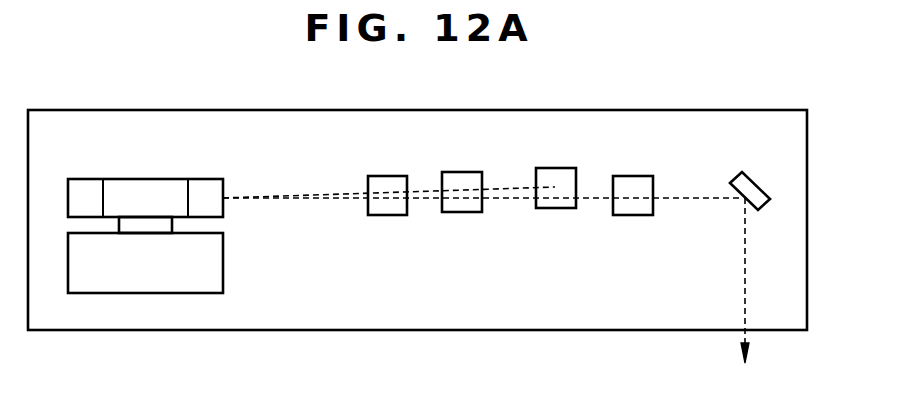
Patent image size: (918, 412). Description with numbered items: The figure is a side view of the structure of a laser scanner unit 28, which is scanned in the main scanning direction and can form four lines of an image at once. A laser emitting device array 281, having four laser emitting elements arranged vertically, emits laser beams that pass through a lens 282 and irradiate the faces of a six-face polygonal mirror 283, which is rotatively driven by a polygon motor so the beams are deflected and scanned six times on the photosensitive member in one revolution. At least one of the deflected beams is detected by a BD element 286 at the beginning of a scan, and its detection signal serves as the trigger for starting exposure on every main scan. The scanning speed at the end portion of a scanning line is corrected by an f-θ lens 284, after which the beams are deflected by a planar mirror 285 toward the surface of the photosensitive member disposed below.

The laser scanner unit 28 is at (97, 110).
The laser emitting device array 281 is at (555, 178).
The lens 282 is at (462, 182).
The polygonal mirror 283 is at (150, 193).
The f-θ lens 284 is at (633, 183).
The planar mirror 285 is at (752, 174).
The BD element 286 is at (388, 183).